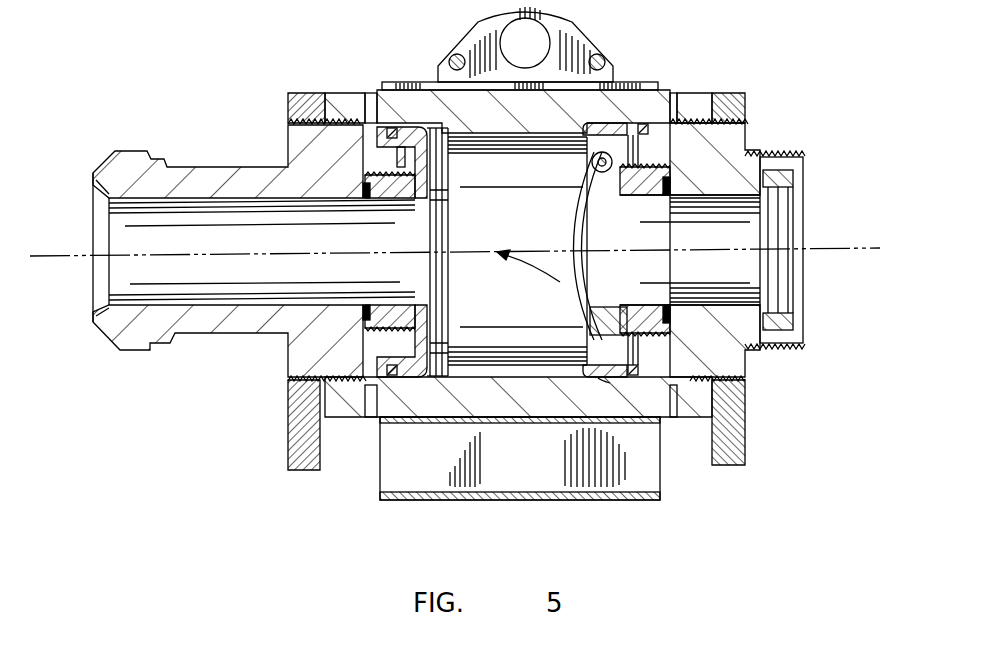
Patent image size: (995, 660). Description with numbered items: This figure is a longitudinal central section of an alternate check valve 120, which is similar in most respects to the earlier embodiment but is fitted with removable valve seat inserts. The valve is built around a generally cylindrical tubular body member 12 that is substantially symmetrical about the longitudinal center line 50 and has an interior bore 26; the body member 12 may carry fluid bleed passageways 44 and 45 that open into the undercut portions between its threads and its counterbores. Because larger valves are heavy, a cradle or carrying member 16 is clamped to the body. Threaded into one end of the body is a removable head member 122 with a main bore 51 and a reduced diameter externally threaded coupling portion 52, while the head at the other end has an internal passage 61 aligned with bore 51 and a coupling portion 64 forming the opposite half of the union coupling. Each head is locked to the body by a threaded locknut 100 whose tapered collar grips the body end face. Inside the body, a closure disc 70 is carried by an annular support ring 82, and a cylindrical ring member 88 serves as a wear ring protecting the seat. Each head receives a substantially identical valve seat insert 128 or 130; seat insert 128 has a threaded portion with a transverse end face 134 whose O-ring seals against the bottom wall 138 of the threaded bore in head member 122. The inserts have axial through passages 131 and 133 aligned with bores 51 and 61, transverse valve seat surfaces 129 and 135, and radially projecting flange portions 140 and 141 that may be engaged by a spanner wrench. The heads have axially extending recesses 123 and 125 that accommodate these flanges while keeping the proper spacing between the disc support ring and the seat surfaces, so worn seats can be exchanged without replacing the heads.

The body member 12 is at (333, 92).
The cradle or carrying member 16 is at (413, 74).
The interior bore 26 is at (492, 358).
The fluid bleed passageway 44 is at (384, 84).
The fluid bleed passageway 45 is at (670, 92).
The longitudinal center line 50 is at (841, 248).
The main bore 51 is at (760, 215).
The reduced diameter externally threaded portion 52 is at (800, 150).
The internal passage 61 is at (212, 308).
The coupling portion 64 is at (165, 160).
The closure disc 70 is at (578, 216).
The annular support ring 82 is at (602, 380).
The cylindrical ring member 88 is at (425, 380).
The threaded locknut 100 is at (288, 108).
The check valve 120 is at (737, 60).
The head member 122 is at (730, 140).
The axially extending recess 123 is at (590, 330).
The axially extending recess 125 is at (450, 360).
The valve seat insert 128 is at (672, 325).
The valve seat surface 129 is at (572, 220).
The valve seat insert 130 is at (358, 378).
The axial through passage 131 is at (656, 216).
The axial through passage 133 is at (392, 300).
The transverse end face 134 is at (655, 320).
The valve seat surface 135 is at (428, 186).
The bottom wall 138 is at (665, 302).
The flange portion 140 is at (626, 90).
The flange portion 141 is at (396, 153).